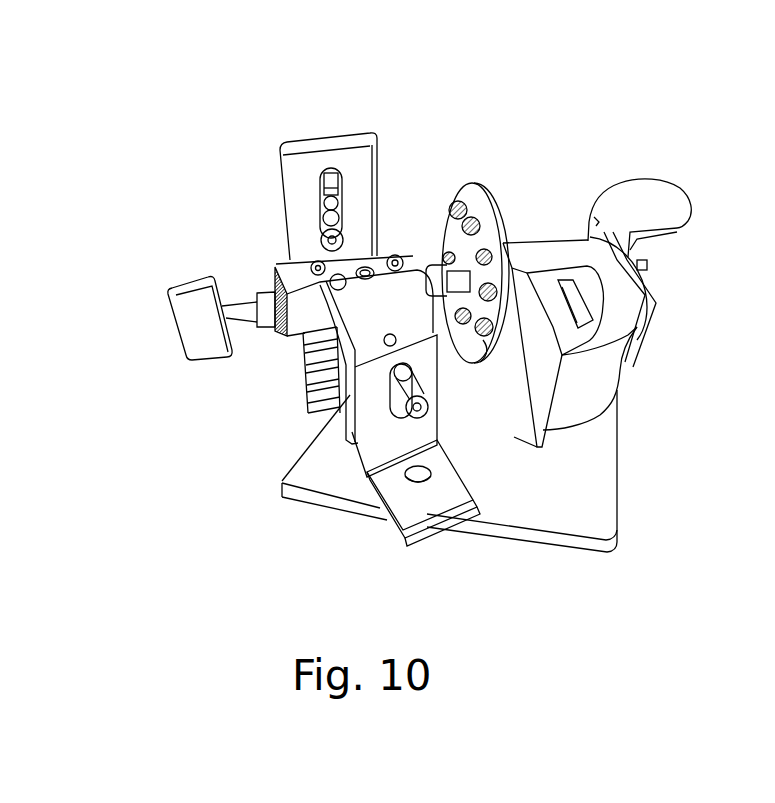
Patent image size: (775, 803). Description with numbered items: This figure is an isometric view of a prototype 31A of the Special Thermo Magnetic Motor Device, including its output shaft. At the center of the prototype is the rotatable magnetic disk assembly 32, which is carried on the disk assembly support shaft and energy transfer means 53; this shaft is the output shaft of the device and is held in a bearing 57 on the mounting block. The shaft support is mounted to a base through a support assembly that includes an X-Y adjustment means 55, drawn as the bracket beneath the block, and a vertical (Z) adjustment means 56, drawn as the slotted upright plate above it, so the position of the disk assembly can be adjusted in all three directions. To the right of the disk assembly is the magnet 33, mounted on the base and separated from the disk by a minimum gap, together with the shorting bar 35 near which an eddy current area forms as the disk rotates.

The prototype of a Special Thermo Magnetic Motor Device 31A is at (273, 563).
The rotatable magnetic disk assembly 32 is at (467, 178).
The magnet 33 is at (585, 385).
The shorting bar 35 is at (483, 353).
The disk assembly support shaft and energy transfer means 53 is at (213, 273).
The support assembly X-Y adjustment means 55 is at (380, 387).
The support assembly vertical (Z) adjustment means 56 is at (347, 160).
The bearing 57 is at (377, 270).